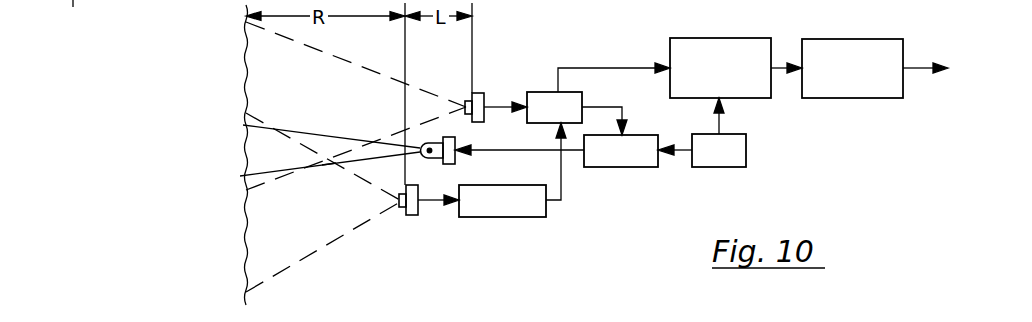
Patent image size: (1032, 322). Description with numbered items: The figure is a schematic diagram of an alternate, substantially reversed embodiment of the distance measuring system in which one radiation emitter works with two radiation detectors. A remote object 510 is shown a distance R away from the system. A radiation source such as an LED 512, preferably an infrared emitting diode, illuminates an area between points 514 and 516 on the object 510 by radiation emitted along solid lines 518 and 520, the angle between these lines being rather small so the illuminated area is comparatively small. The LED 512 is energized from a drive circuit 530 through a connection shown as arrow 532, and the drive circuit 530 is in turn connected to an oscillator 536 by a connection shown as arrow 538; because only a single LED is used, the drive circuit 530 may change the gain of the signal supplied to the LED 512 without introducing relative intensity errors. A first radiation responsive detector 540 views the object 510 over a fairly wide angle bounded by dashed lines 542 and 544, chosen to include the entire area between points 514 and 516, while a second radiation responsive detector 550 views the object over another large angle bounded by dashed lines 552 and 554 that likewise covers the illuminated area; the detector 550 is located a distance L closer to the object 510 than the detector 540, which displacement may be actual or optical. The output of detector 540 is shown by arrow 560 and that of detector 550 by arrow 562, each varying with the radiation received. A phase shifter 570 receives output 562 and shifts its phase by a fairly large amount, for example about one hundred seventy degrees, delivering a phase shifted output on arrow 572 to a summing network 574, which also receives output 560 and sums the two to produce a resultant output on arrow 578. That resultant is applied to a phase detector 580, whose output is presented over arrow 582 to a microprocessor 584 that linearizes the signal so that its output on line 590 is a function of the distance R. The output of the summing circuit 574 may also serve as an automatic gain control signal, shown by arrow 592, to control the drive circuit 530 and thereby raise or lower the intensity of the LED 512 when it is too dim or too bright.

The remote object 510 is at (250, 82).
The LED 512 is at (455, 137).
The point 514 is at (243, 127).
The point 516 is at (243, 174).
The solid line 518 is at (328, 137).
The solid line 520 is at (327, 165).
The drive circuit 530 is at (622, 167).
The arrow 532 is at (510, 152).
The oscillator 536 is at (746, 152).
The arrow 538 is at (685, 152).
The first radiation responsive detector 540 is at (478, 93).
The dashed line 542 is at (325, 53).
The dashed line 544 is at (283, 177).
The second radiation responsive detector 550 is at (413, 215).
The dashed line 552 is at (373, 190).
The dashed line 554 is at (298, 257).
The arrow 560 is at (500, 105).
The arrow 562 is at (437, 198).
The phase shifter 570 is at (497, 217).
The arrow 572 is at (563, 192).
The summing network 574 is at (556, 92).
The arrow 578 is at (587, 67).
The phase detector 580 is at (698, 38).
The arrow 582 is at (782, 65).
The microprocessor 584 is at (850, 38).
The arrow 590 is at (917, 68).
The arrow 592 is at (630, 112).